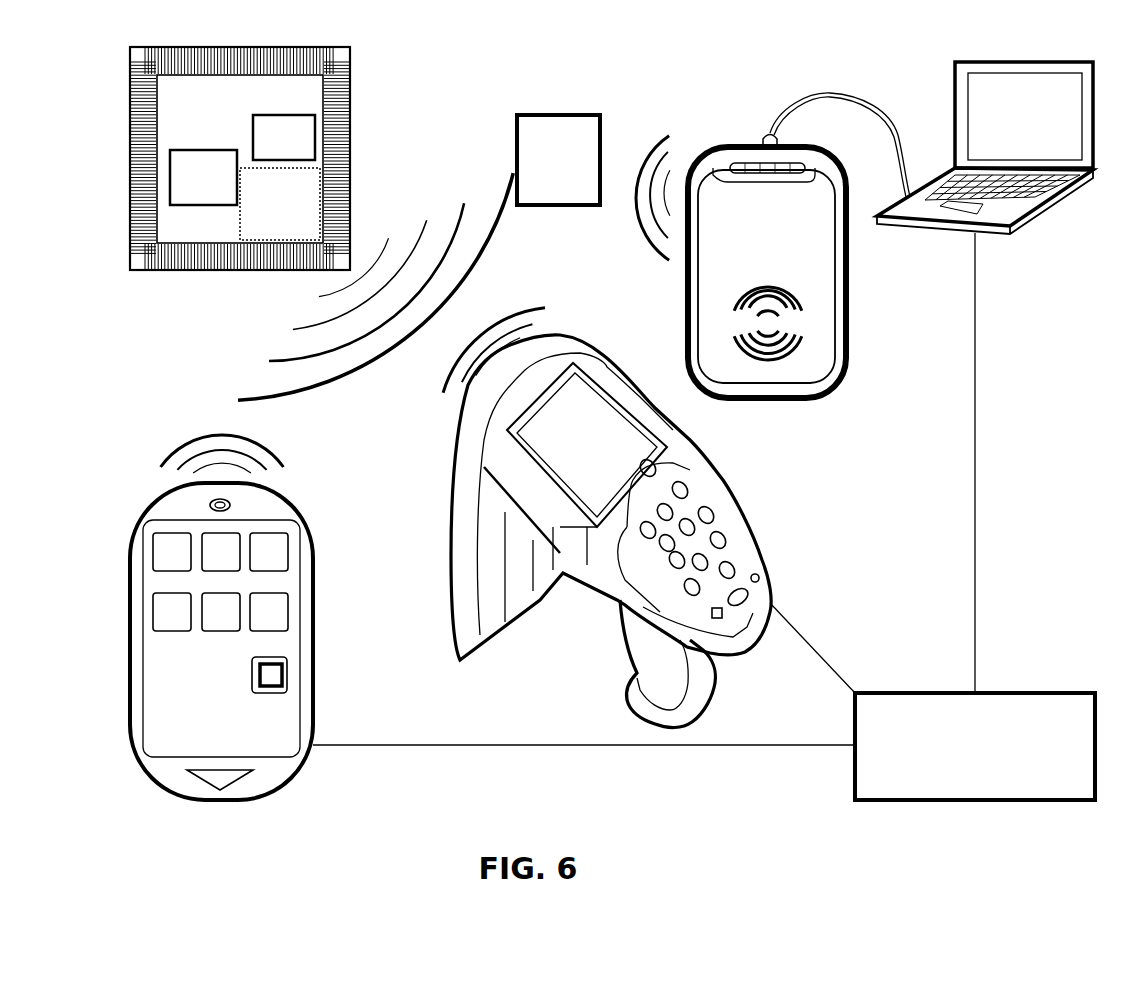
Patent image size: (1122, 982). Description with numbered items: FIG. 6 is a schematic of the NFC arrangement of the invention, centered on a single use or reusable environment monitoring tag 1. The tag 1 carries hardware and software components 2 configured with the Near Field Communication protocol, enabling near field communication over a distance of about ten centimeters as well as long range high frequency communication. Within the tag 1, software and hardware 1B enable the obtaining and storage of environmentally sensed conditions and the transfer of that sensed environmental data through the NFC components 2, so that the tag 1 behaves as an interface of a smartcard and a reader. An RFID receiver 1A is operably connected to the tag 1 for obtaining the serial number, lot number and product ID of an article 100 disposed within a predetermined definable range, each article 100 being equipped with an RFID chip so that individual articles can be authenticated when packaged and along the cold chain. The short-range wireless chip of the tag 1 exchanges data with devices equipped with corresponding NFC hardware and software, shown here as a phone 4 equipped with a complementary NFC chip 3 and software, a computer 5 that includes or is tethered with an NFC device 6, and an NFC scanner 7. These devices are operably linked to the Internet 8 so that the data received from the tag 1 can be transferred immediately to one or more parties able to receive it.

The environment monitoring tag 1 is at (275, 158).
The RFID receiver 1A is at (203, 177).
The software and hardware 1B is at (284, 137).
The hardware and software components 2 is at (317, 214).
The NFC chip 3 is at (297, 667).
The phone 4 is at (275, 617).
The computer 5 is at (915, 240).
The NFC device 6 is at (864, 362).
The NFC scanner 7 is at (747, 508).
The Internet 8 is at (913, 700).
The article 100 is at (558, 160).